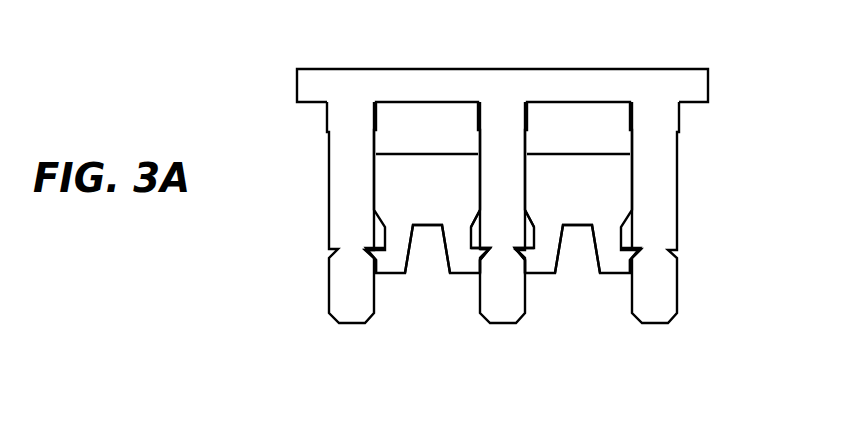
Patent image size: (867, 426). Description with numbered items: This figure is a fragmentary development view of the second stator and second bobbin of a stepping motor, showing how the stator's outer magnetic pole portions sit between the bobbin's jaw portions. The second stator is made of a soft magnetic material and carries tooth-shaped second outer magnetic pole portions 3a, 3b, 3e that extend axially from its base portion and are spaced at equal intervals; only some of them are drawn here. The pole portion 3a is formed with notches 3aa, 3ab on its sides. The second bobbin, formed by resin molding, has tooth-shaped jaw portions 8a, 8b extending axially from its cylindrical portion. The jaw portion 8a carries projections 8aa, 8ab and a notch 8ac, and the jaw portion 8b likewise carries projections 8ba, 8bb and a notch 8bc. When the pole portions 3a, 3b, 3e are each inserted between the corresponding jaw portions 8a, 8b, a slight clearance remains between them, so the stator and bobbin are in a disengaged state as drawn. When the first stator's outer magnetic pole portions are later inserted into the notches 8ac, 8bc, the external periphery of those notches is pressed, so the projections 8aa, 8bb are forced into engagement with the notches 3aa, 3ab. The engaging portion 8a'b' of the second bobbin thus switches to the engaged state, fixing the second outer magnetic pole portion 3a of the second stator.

The second outer magnetic pole portion 3a is at (502, 310).
The second outer magnetic pole portion 3b is at (343, 306).
The second outer magnetic pole portion 3e is at (664, 308).
The notch 3aa is at (518, 247).
The notch 3ab is at (488, 248).
The jaw portion 8a is at (577, 143).
The jaw portion 8b is at (425, 175).
The projection 8aa is at (526, 255).
The projection 8ab is at (631, 256).
The notch 8ac is at (583, 227).
The projection 8ba is at (390, 257).
The projection 8bb is at (479, 255).
The notch 8bc is at (435, 227).
The engaging portion 8a'b' is at (500, 207).